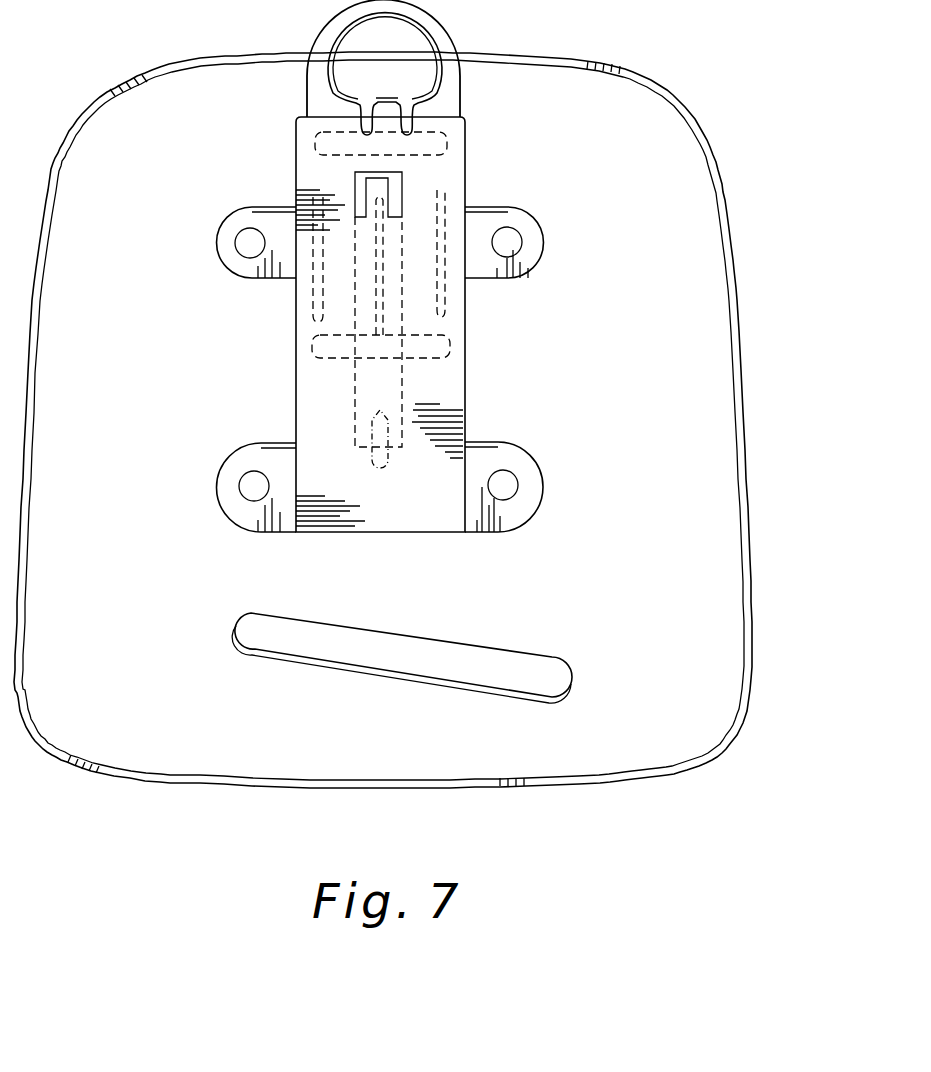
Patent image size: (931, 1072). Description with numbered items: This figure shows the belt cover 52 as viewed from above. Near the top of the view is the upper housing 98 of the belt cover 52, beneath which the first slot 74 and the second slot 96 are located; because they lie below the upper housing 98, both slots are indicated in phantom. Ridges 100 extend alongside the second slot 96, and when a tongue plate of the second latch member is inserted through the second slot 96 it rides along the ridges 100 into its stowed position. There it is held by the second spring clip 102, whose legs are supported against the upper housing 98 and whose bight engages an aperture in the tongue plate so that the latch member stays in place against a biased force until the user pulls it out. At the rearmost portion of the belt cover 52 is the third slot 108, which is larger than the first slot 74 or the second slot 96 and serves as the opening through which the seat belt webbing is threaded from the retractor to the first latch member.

The belt cover 52 is at (738, 312).
The first slot 74 is at (447, 143).
The second slot 96 is at (447, 345).
The upper housing 98 is at (453, 385).
The ridges 100 is at (437, 200).
The second spring clip 102 is at (355, 407).
The third slot 108 is at (453, 667).